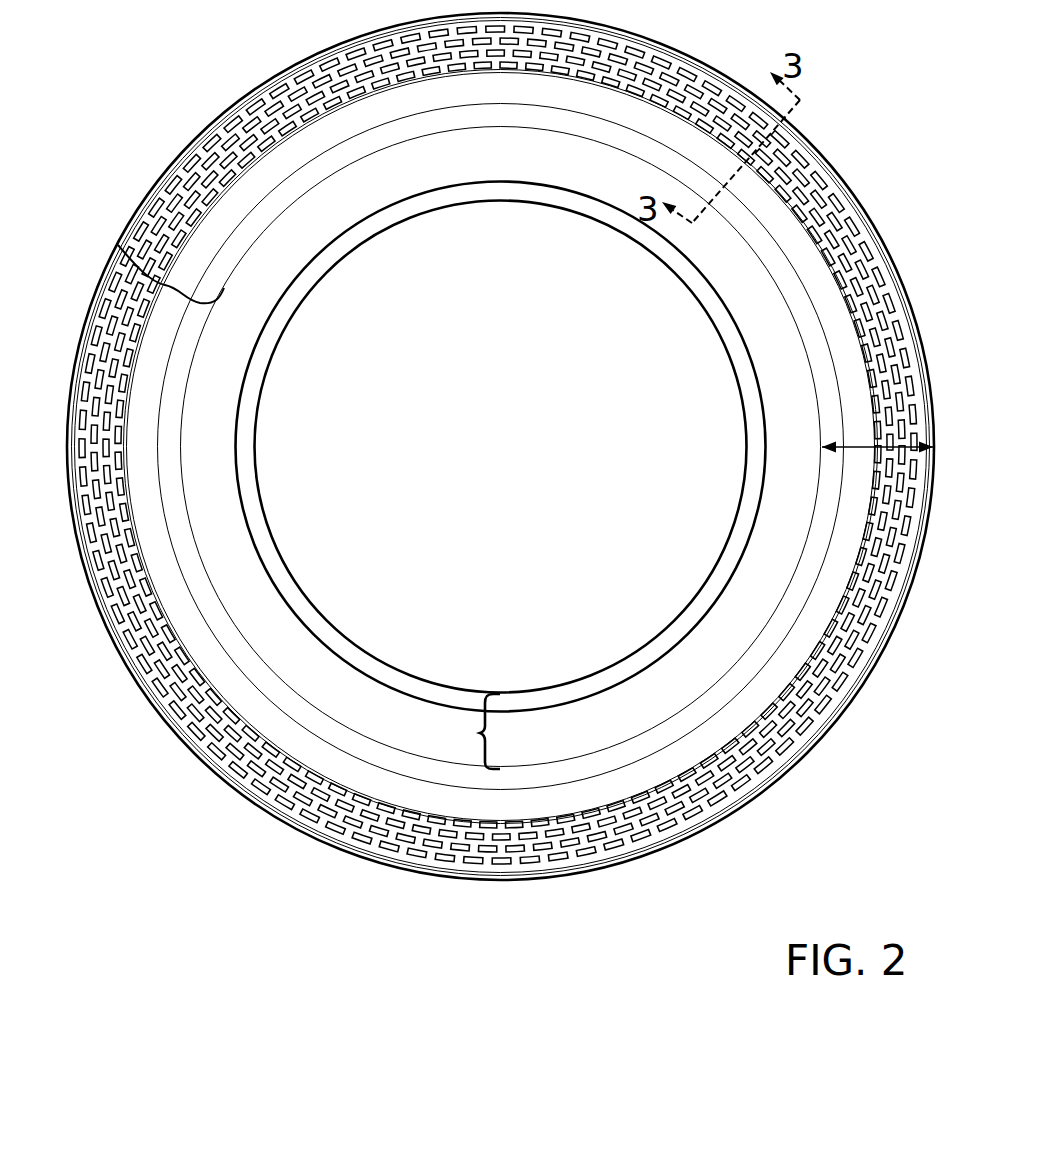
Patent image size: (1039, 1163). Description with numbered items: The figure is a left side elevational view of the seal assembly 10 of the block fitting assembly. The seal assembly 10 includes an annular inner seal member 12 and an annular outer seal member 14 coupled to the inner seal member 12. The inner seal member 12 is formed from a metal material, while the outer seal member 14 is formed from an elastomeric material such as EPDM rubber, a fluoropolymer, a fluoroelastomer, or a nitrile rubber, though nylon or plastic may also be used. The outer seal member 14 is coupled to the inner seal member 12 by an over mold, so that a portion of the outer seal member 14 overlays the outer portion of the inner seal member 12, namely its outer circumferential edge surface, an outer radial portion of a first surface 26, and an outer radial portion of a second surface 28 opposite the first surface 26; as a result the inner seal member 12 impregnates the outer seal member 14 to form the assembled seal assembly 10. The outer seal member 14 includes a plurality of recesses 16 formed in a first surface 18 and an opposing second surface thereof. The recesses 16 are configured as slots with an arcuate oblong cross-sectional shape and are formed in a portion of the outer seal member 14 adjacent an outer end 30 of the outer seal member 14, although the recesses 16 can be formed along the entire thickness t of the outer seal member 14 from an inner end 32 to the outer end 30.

The seal assembly 10 is at (150, 58).
The inner seal member 12 is at (480, 733).
The outer seal member 14 is at (155, 285).
The recesses 16 is at (222, 693).
The first surface 18 is at (265, 782).
The first surface 26 is at (667, 690).
The second surface 28 is at (403, 222).
The outer end 30 is at (720, 822).
The inner end 32 is at (805, 533).
The thickness t is at (880, 446).